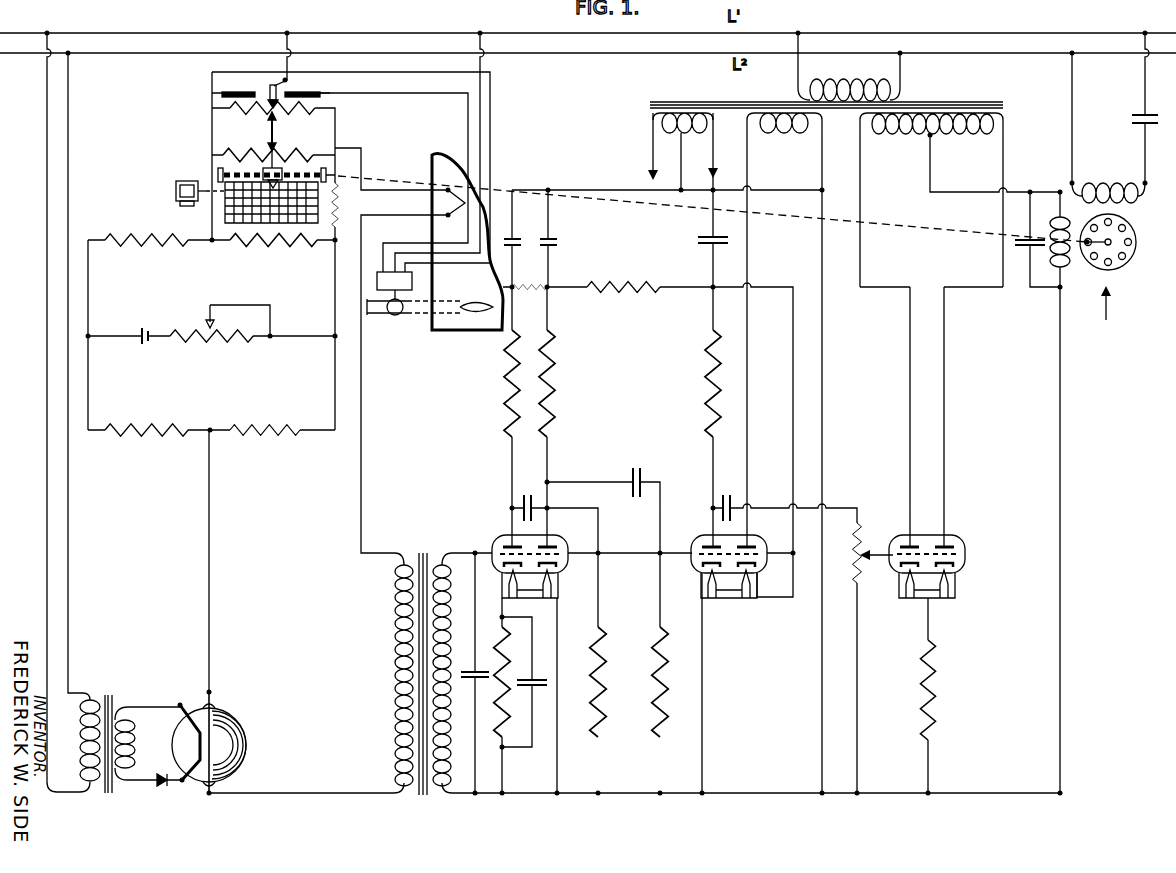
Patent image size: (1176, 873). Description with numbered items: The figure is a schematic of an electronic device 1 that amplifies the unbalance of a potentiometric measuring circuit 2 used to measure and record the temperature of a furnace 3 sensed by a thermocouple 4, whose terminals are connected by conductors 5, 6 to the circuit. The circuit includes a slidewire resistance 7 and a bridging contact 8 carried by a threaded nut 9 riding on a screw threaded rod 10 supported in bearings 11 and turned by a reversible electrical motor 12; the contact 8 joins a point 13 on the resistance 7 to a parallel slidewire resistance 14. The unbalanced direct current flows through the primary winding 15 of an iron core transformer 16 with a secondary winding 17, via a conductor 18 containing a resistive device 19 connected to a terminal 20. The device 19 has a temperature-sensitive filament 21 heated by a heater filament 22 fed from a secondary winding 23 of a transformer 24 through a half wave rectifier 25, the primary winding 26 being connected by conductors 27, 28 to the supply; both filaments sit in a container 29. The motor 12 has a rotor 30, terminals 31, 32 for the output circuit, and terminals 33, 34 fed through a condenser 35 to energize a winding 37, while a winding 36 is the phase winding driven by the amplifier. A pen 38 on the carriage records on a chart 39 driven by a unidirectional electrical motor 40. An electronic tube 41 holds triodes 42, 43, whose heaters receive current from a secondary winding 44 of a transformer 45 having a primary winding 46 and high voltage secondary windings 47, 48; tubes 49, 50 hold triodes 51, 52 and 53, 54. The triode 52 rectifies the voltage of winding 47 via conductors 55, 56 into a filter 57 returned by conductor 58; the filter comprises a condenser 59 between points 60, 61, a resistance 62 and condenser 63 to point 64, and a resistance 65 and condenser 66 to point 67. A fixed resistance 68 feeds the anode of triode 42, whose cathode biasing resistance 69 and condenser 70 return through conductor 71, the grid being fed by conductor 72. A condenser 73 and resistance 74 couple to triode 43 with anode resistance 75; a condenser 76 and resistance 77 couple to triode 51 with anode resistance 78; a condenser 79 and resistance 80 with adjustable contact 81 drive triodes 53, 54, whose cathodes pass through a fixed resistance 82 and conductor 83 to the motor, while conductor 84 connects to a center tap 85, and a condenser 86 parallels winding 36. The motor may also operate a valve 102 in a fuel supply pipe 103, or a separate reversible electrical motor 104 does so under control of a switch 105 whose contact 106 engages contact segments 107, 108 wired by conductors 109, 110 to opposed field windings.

The electronic device 1 is at (566, 160).
The potentiometric measuring circuit 2 is at (236, 288).
The furnace 3 is at (467, 165).
The thermocouple 4 is at (440, 167).
The conductor 5 is at (362, 155).
The conductor 6 is at (358, 290).
The slidewire resistance 7 is at (298, 110).
The contact 8 is at (270, 124).
The nut 9 is at (284, 173).
The screw threaded rod 10 is at (240, 174).
The bearings 11 is at (218, 171).
The reversible electrical motor 12 is at (1108, 332).
The point 13 is at (276, 118).
The slidewire resistance 14 is at (262, 152).
The primary winding 15 is at (395, 670).
The iron core transformer 16 is at (424, 552).
The secondary winding 17 is at (450, 650).
The conductor 18 is at (300, 793).
The resistive device 19 is at (244, 718).
The terminal 20 is at (210, 428).
The filament 21 is at (222, 743).
The heater filament 22 is at (200, 747).
The secondary winding 23 is at (134, 748).
The transformer 24 is at (106, 696).
The half wave rectifier 25 is at (163, 790).
The primary winding 26 is at (80, 741).
The conductor 27 is at (68, 518).
The conductor 28 is at (47, 489).
The container 29 is at (220, 708).
The rotor 30 is at (1124, 264).
The terminal 31 is at (1055, 190).
The terminal 32 is at (1060, 290).
The terminal 33 is at (1074, 183).
The terminal 34 is at (1143, 183).
The condenser 35 is at (1132, 118).
The winding 36 is at (1051, 252).
The winding 37 is at (1110, 180).
The pen 38 is at (285, 181).
The recorder chart 39 is at (345, 214).
The unidirectional electrical motor 40 is at (176, 190).
The electronic tube 41 is at (503, 535).
The triode 42 is at (486, 585).
The triode 43 is at (560, 569).
The secondary winding 44 is at (682, 133).
The transformer 45 is at (650, 104).
The primary winding 46 is at (850, 80).
The secondary winding 47 is at (778, 132).
The secondary winding 48 is at (915, 136).
The electronic tube 49 is at (701, 535).
The electronic tube 50 is at (904, 536).
The triode 51 is at (680, 585).
The triode 52 is at (774, 585).
The triode 53 is at (887, 585).
The triode 54 is at (981, 585).
The conductor 55 is at (747, 265).
The conductor 56 is at (793, 398).
The filter 57 is at (636, 262).
The conductor 58 is at (775, 190).
The condenser 59 is at (698, 241).
The point 60 is at (713, 190).
The point 61 is at (708, 292).
The resistance 62 is at (620, 290).
The condenser 63 is at (552, 238).
The point 64 is at (550, 290).
The resistance 65 is at (540, 270).
The condenser 66 is at (514, 238).
The point 67 is at (511, 284).
The fixed resistance 68 is at (508, 386).
The cathode biasing resistance 69 is at (506, 680).
The condenser 70 is at (536, 679).
The conductor 71 is at (822, 398).
The conductor 72 is at (493, 552).
The condenser 73 is at (527, 494).
The resistance 74 is at (601, 672).
The fixed resistance 75 is at (551, 390).
The condenser 76 is at (636, 467).
The resistance 77 is at (663, 672).
The fixed resistance 78 is at (710, 390).
The condenser 79 is at (727, 494).
The resistance 80 is at (857, 562).
The contact 81 is at (879, 528).
The fixed resistance 82 is at (933, 682).
The conductor 83 is at (950, 793).
The conductor 84 is at (947, 192).
The center tap 85 is at (935, 136).
The condenser 86 is at (1018, 247).
The valve 102 is at (398, 315).
The fuel supply pipe 103 is at (371, 318).
The reversible electrical motor 104 is at (380, 271).
The switch 105 is at (202, 82).
The contact 106 is at (286, 92).
The contact segment 107 is at (228, 93).
The contact segment 108 is at (324, 95).
The conductor 109 is at (491, 111).
The conductor 110 is at (468, 118).